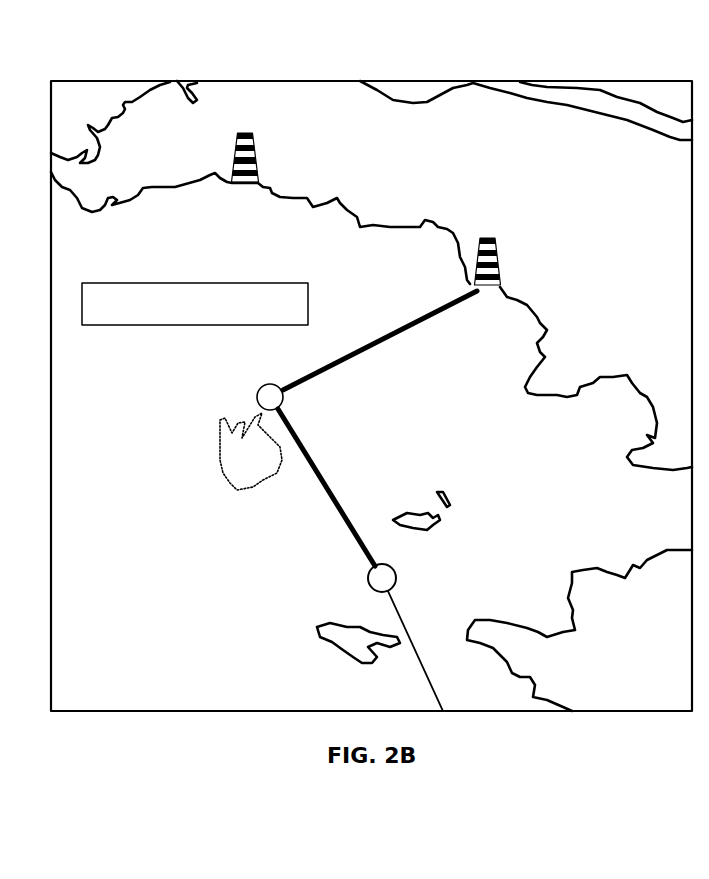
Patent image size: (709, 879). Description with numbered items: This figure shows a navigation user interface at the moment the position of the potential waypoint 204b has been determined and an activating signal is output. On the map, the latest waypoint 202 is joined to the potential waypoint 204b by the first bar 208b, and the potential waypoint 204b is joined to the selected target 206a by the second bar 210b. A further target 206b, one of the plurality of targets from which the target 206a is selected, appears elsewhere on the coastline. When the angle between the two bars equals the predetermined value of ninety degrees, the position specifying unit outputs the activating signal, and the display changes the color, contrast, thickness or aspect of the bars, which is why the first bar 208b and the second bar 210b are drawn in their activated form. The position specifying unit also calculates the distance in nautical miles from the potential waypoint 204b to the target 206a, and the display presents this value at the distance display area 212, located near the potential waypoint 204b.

The latest waypoint 202 is at (366, 578).
The potential waypoint 204b is at (255, 382).
The target 206a is at (500, 255).
The target 206b is at (258, 146).
The first bar 208b is at (335, 508).
The second bar 210b is at (365, 352).
The distance display area 212 is at (311, 305).